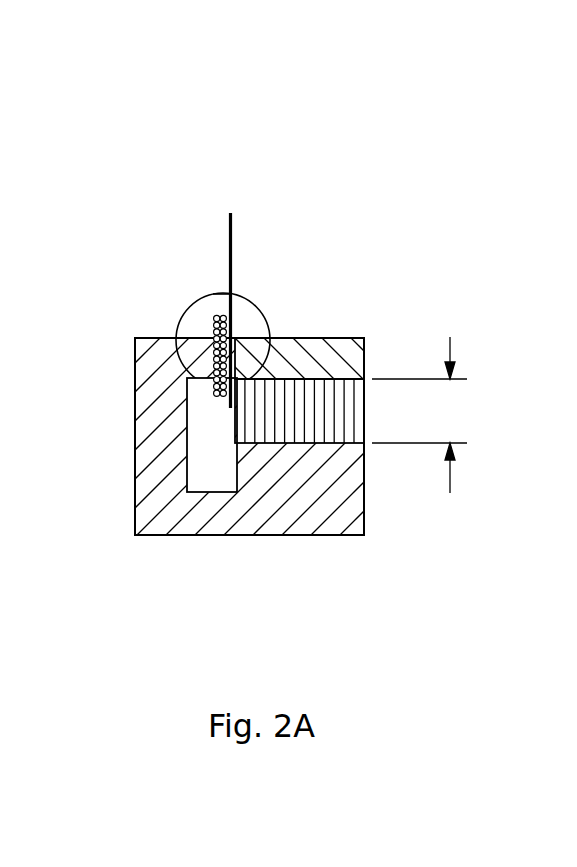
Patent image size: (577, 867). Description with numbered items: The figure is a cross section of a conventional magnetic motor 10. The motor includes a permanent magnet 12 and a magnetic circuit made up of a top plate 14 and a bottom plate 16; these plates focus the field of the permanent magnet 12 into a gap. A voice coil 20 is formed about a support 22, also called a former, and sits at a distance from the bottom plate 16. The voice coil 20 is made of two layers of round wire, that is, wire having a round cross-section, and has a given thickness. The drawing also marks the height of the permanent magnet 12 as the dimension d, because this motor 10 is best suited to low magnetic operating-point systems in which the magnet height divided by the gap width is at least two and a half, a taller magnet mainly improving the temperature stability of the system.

The magnetic motor 10 is at (424, 118).
The permanent magnet 12 is at (325, 418).
The top plate 14 is at (315, 352).
The bottom plate 16 is at (315, 517).
The voice coil 20 is at (222, 315).
The support 22 is at (233, 252).